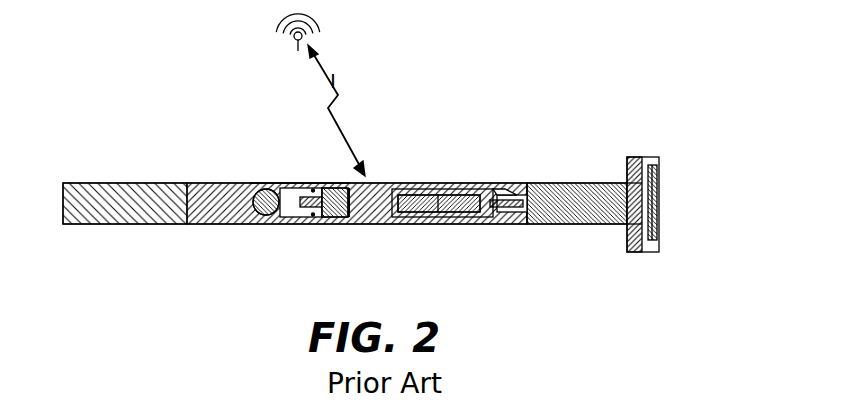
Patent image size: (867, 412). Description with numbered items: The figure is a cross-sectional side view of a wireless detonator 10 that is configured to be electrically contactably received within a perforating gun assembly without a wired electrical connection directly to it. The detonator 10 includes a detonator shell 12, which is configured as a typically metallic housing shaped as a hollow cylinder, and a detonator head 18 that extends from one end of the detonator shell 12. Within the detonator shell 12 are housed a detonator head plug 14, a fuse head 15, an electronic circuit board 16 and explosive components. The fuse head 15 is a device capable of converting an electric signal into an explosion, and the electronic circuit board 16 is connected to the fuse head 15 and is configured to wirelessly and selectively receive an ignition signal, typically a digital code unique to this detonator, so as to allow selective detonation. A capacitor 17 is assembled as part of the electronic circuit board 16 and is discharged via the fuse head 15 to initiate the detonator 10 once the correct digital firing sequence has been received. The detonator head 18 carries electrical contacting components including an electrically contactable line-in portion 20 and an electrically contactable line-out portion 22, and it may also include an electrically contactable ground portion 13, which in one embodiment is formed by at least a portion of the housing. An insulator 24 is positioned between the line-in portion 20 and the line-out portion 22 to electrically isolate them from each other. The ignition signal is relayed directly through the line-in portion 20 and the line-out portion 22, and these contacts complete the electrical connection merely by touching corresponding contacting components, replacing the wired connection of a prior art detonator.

The detonator 10 is at (457, 146).
The detonator shell 12 is at (270, 183).
The ground portion 13 is at (299, 183).
The detonator head plug 14 is at (588, 224).
The fuse head 15 is at (264, 214).
The electronic circuit board 16 is at (437, 210).
The capacitor 17 is at (363, 207).
The detonator head 18 is at (641, 258).
The line-in portion 20 is at (655, 197).
The line-out portion 22 is at (637, 157).
The insulator 24 is at (650, 157).